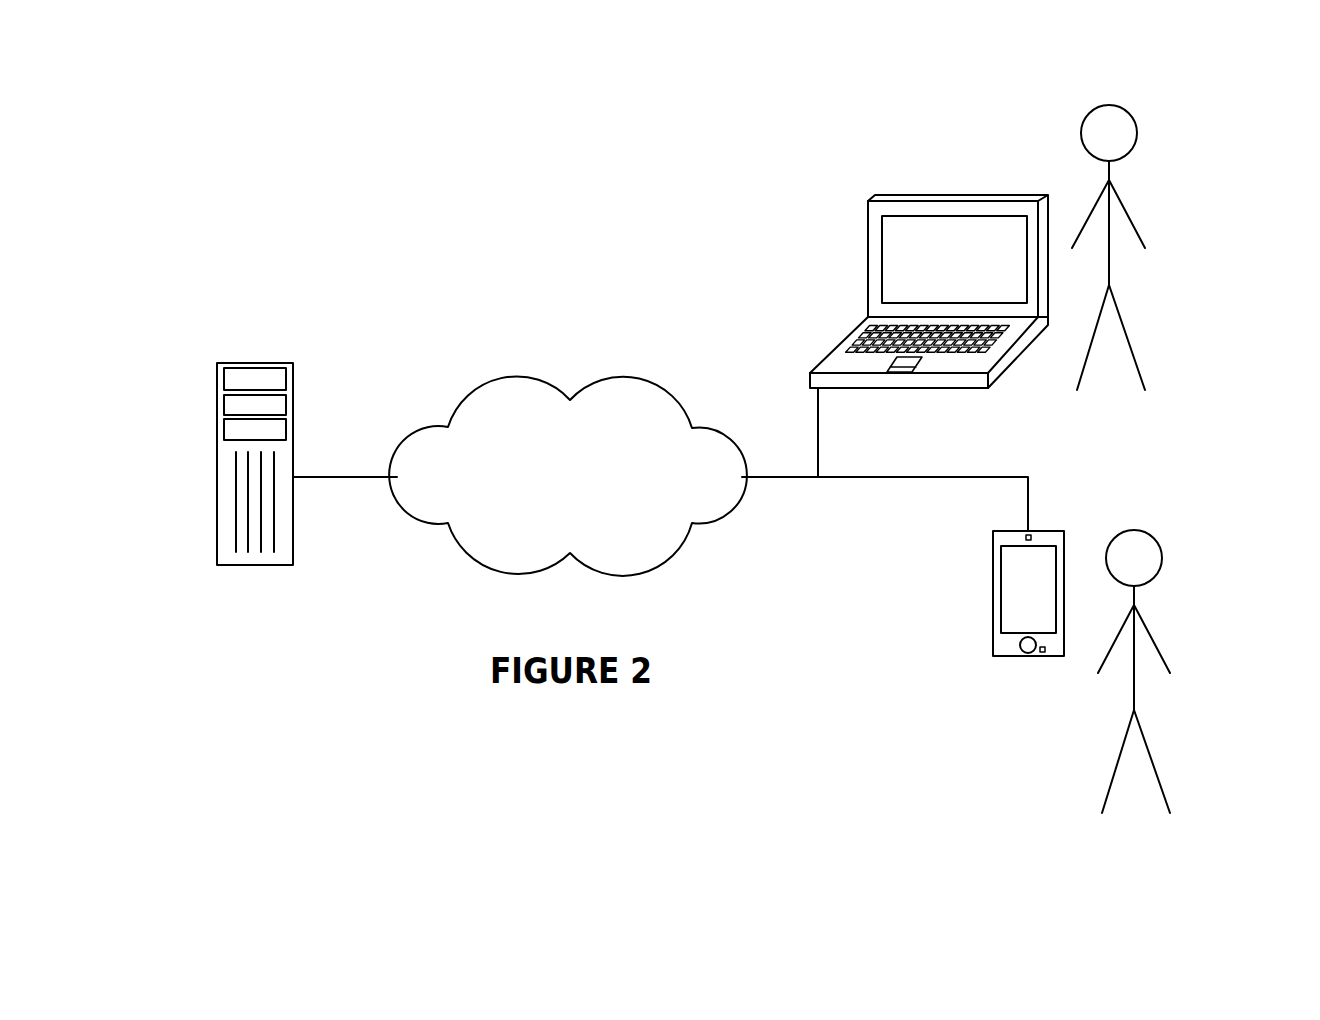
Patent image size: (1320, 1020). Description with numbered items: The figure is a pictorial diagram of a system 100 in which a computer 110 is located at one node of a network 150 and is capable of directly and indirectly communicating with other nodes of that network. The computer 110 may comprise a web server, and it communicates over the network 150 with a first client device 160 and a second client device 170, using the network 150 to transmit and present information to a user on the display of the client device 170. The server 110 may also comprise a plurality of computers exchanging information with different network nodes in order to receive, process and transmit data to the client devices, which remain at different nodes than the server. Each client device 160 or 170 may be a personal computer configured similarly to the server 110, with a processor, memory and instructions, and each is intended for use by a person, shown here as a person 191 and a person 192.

The system 100 is at (260, 62).
The computer 110 is at (216, 375).
The network 150 is at (517, 379).
The client device 160 is at (992, 552).
The client device 170 is at (867, 232).
The person 191 is at (1137, 193).
The person 192 is at (1162, 602).